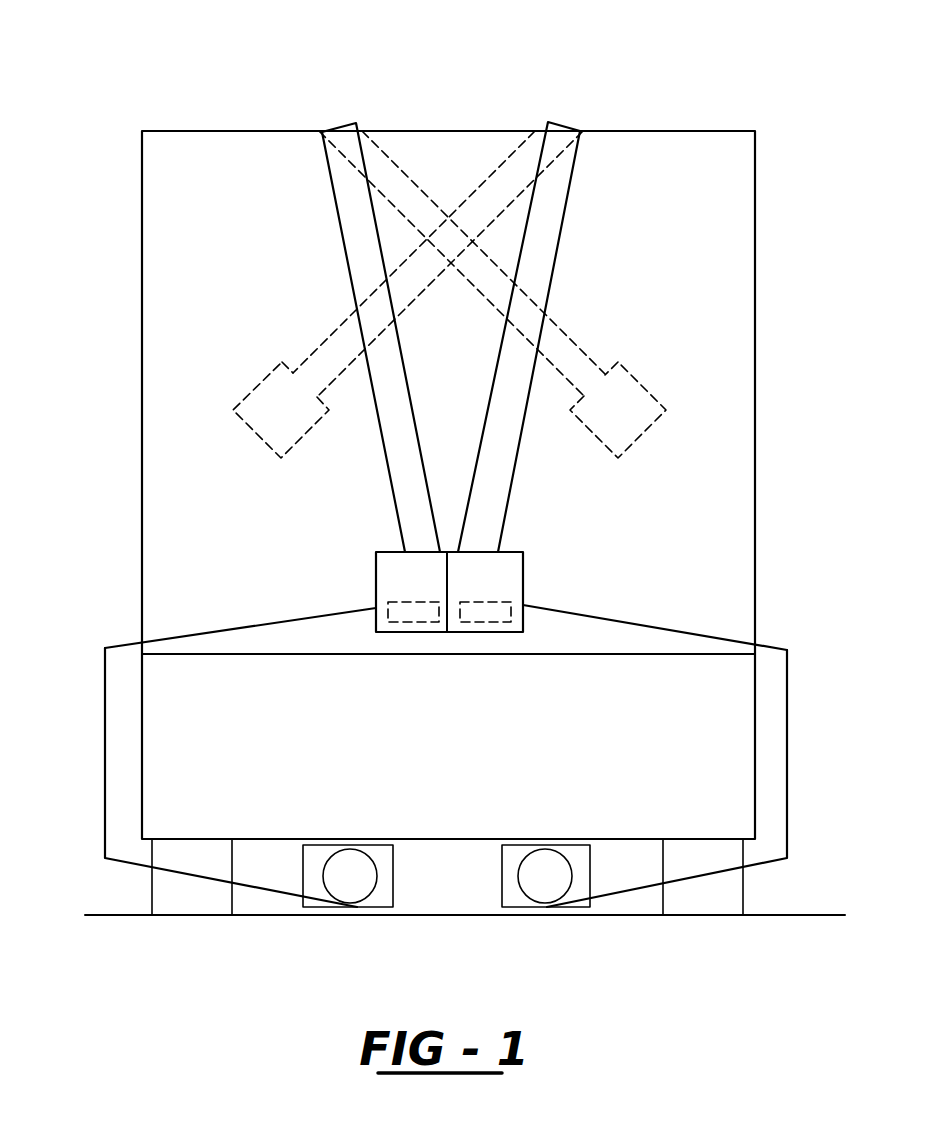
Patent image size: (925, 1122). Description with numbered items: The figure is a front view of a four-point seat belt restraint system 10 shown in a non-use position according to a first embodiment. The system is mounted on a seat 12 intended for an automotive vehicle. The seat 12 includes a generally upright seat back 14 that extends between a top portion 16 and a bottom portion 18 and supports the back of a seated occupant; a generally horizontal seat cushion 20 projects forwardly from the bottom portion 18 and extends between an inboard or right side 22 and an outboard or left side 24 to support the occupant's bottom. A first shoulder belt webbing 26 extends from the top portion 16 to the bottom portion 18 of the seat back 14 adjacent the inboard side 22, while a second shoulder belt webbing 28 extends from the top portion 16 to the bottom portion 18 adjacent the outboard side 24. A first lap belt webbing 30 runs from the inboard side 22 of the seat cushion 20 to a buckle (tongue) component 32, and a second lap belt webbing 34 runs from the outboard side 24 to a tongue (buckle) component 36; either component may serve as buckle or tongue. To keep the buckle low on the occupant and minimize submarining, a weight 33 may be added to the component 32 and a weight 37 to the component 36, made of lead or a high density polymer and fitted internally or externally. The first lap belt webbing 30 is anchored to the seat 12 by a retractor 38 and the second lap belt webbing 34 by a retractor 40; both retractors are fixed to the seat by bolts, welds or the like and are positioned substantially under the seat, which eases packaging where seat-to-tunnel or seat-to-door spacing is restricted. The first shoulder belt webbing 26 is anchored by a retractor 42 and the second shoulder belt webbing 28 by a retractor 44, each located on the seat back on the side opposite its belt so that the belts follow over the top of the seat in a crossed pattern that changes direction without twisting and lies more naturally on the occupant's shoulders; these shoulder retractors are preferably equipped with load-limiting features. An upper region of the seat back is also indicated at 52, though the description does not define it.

The four-point seat belt restraint system 10 is at (106, 126).
The seat 12 is at (678, 162).
The seat back 14 is at (725, 283).
The top portion 16 is at (244, 155).
The bottom portion 18 is at (718, 583).
The seat cushion 20 is at (715, 740).
The inboard side 22 is at (172, 772).
The outboard side 24 is at (685, 802).
The first shoulder belt webbing 26 is at (362, 229).
The second shoulder belt webbing 28 is at (548, 213).
The first lap belt webbing 30 is at (107, 708).
The buckle (tongue) component 32 is at (376, 573).
The weight 33 is at (405, 622).
The second lap belt webbing 34 is at (787, 687).
The tongue (buckle) component 36 is at (523, 575).
The weight 37 is at (478, 622).
The retractor 38 is at (350, 877).
The retractor 40 is at (545, 877).
The retractor 42 is at (613, 403).
The retractor 44 is at (262, 395).
The seat back top portion 52 is at (180, 183).